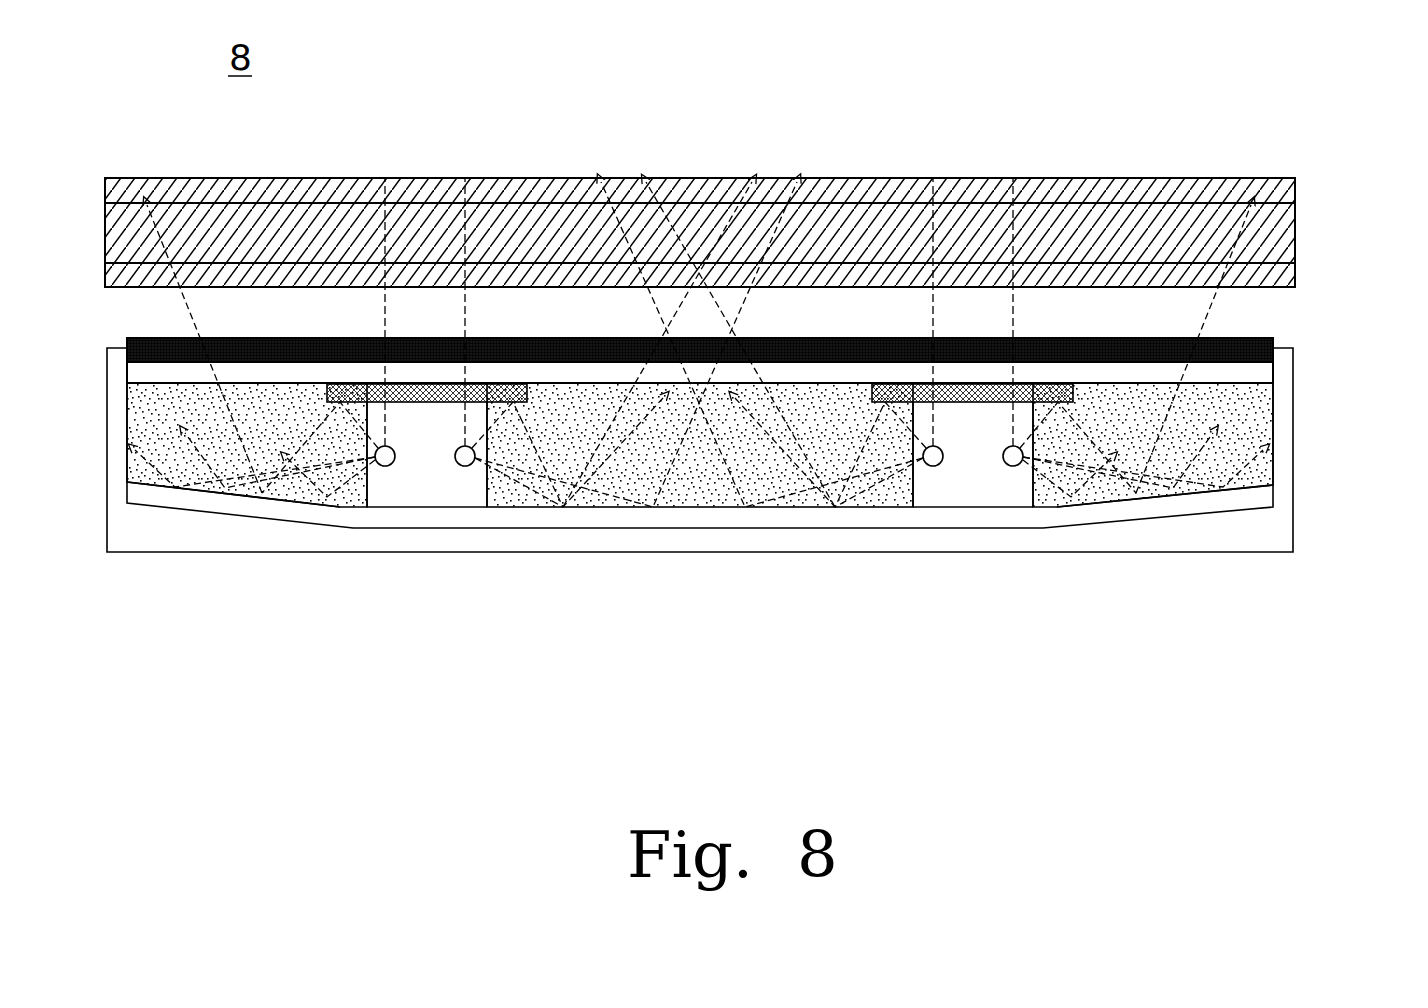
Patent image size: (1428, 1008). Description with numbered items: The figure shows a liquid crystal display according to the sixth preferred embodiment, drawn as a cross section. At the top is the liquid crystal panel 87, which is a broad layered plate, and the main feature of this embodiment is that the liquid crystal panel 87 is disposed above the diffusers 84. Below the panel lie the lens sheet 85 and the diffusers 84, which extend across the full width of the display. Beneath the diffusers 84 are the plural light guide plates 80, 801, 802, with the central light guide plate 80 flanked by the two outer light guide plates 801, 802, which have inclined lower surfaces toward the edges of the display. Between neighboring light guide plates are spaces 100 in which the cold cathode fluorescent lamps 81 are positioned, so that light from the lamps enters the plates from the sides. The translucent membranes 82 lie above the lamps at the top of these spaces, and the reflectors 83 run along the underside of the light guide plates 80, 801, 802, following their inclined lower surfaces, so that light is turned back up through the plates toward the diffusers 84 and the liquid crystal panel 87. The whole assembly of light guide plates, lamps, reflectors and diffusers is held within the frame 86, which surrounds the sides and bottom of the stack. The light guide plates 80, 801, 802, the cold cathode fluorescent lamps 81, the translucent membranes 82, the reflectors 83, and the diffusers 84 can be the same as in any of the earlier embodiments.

The light guide plate 80 is at (702, 482).
The light guide plate 801 is at (143, 470).
The light guide plate 802 is at (1257, 463).
The cold cathode fluorescent lamps 81 is at (374, 462).
The translucent membranes 82 is at (967, 407).
The reflectors 83 is at (1167, 507).
The diffusers 84 is at (1252, 373).
The lens sheet 85 is at (1247, 347).
The frame 86 is at (603, 537).
The liquid crystal panel 87 is at (1302, 232).
The space 100 is at (431, 485).